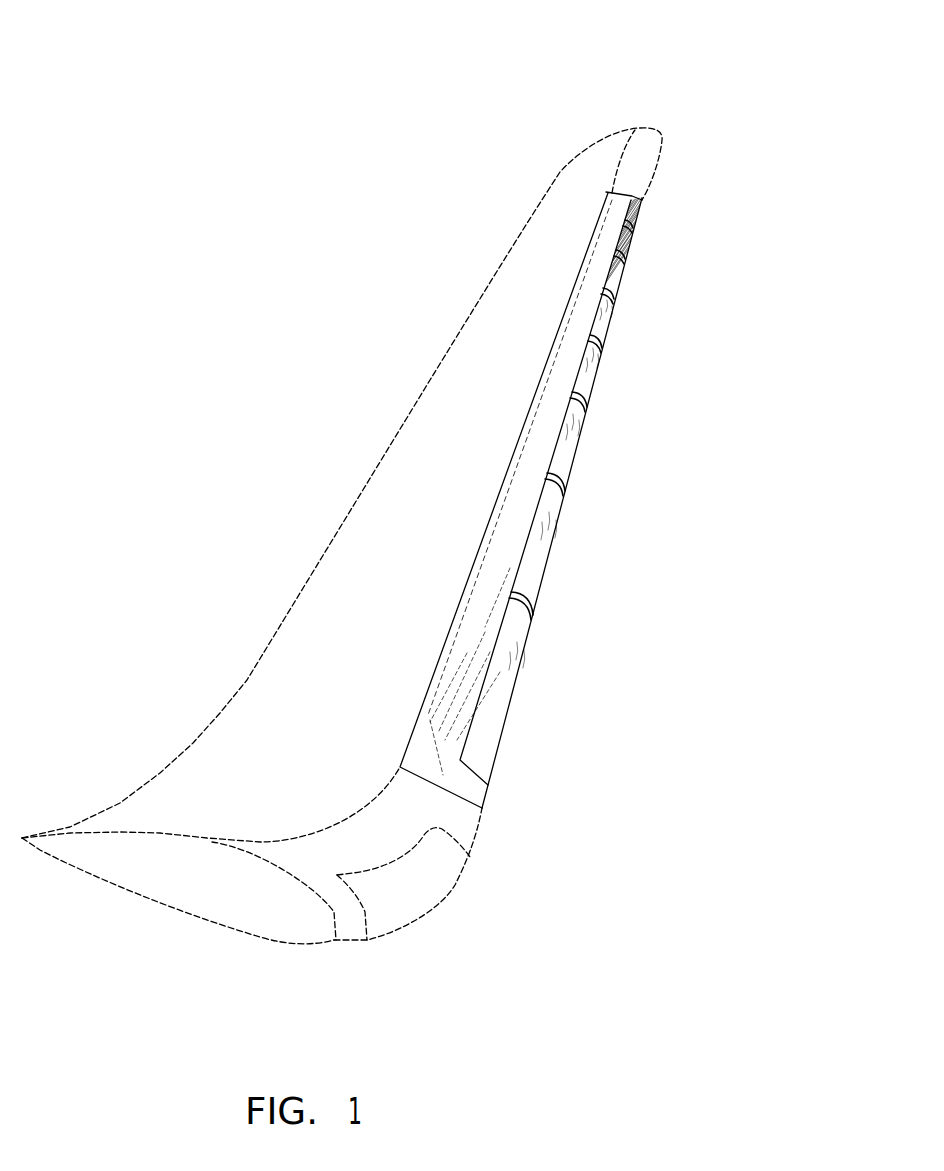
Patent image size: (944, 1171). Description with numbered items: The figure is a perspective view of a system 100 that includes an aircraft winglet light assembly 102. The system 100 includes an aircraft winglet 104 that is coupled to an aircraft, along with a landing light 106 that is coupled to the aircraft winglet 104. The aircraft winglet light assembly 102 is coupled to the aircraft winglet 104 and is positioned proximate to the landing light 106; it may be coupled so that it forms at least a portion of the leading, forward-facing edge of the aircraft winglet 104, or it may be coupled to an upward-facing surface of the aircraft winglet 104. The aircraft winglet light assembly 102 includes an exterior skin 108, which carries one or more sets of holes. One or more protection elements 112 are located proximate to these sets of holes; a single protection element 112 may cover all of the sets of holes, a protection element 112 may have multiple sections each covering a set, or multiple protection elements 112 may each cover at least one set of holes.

The system 100 is at (256, 109).
The aircraft winglet light assembly 102 is at (656, 567).
The aircraft winglet 104 is at (343, 625).
The landing light 106 is at (437, 880).
The exterior skin 108 is at (618, 193).
The protection element 112 is at (640, 210).